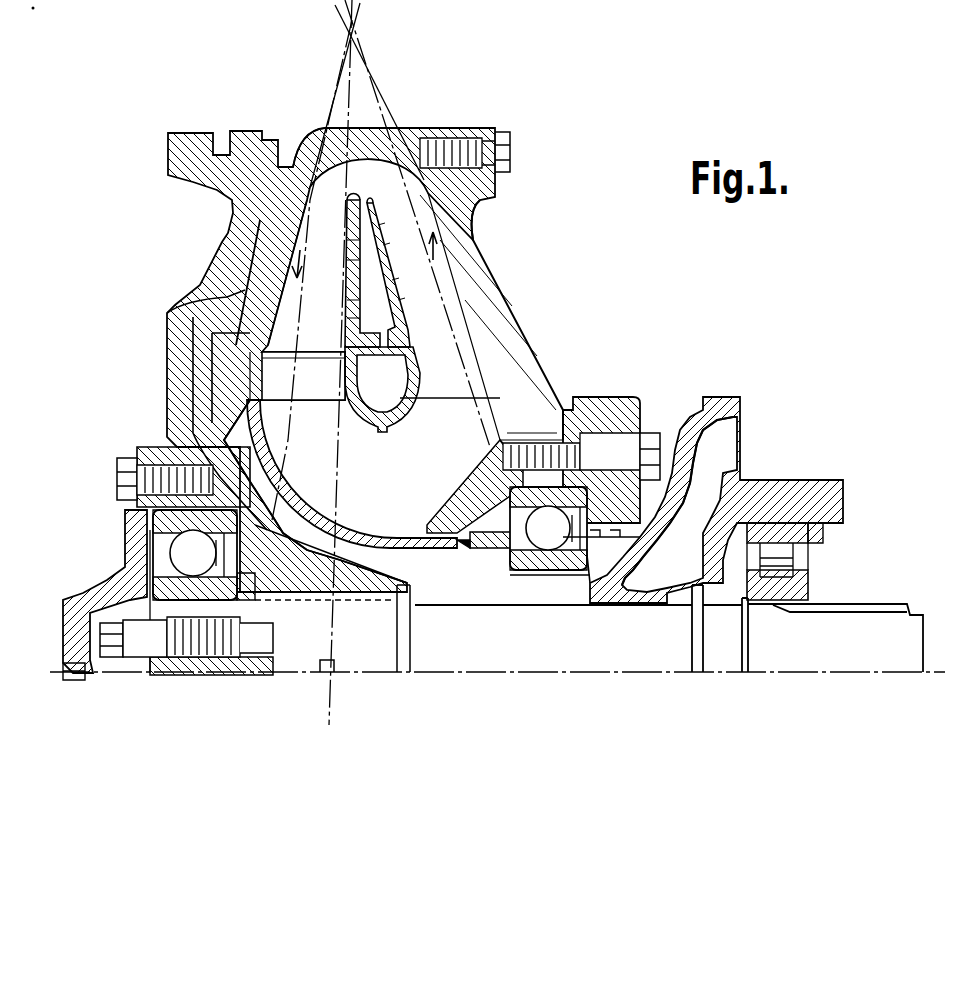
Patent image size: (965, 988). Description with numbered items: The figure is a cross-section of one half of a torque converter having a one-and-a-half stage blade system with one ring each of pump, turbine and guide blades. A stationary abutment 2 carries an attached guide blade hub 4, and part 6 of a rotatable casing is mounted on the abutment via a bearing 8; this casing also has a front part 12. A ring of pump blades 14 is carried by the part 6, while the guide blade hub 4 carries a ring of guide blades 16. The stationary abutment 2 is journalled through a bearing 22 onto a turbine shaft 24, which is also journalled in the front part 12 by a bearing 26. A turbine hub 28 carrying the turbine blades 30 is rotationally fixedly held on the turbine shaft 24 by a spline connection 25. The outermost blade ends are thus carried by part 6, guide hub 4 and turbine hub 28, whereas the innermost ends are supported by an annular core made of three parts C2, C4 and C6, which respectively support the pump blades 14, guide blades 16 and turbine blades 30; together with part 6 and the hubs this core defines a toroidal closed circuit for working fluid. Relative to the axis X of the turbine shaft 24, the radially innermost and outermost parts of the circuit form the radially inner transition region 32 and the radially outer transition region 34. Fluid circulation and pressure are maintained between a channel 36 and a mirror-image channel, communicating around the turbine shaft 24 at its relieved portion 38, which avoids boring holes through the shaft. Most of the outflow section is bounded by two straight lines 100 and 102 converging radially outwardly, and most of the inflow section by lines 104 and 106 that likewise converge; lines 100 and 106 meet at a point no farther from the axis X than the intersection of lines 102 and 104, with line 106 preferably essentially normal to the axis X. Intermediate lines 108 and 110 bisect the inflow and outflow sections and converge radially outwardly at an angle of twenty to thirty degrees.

The stationary abutment 2 is at (716, 483).
The guide blade hub 4 is at (253, 427).
The rotatable casing part 6 is at (528, 380).
The bearing 8 is at (640, 437).
The front part 12 is at (233, 253).
The pump blades 14 is at (475, 350).
The guide blades 16 is at (273, 390).
The bearing 22 is at (800, 583).
The turbine shaft 24 is at (576, 652).
The spline connection 25 is at (362, 600).
The bearing 26 is at (150, 590).
The turbine hub 28 is at (287, 570).
The turbine blades 30 is at (280, 335).
The radially inner transition region 32 is at (375, 500).
The radially outer transition region 34 is at (344, 194).
The channel 36 is at (722, 438).
The relieved portion 38 is at (508, 602).
The straight line 100 is at (360, 128).
The straight line 102 is at (387, 113).
The straight line 104 is at (337, 78).
The straight line 106 is at (380, 93).
The intermediate line 108 is at (283, 478).
The intermediate line 110 is at (483, 450).
The core part C2 is at (400, 282).
The core part C4 is at (372, 413).
The core part C6 is at (343, 193).
The axis X is at (623, 683).